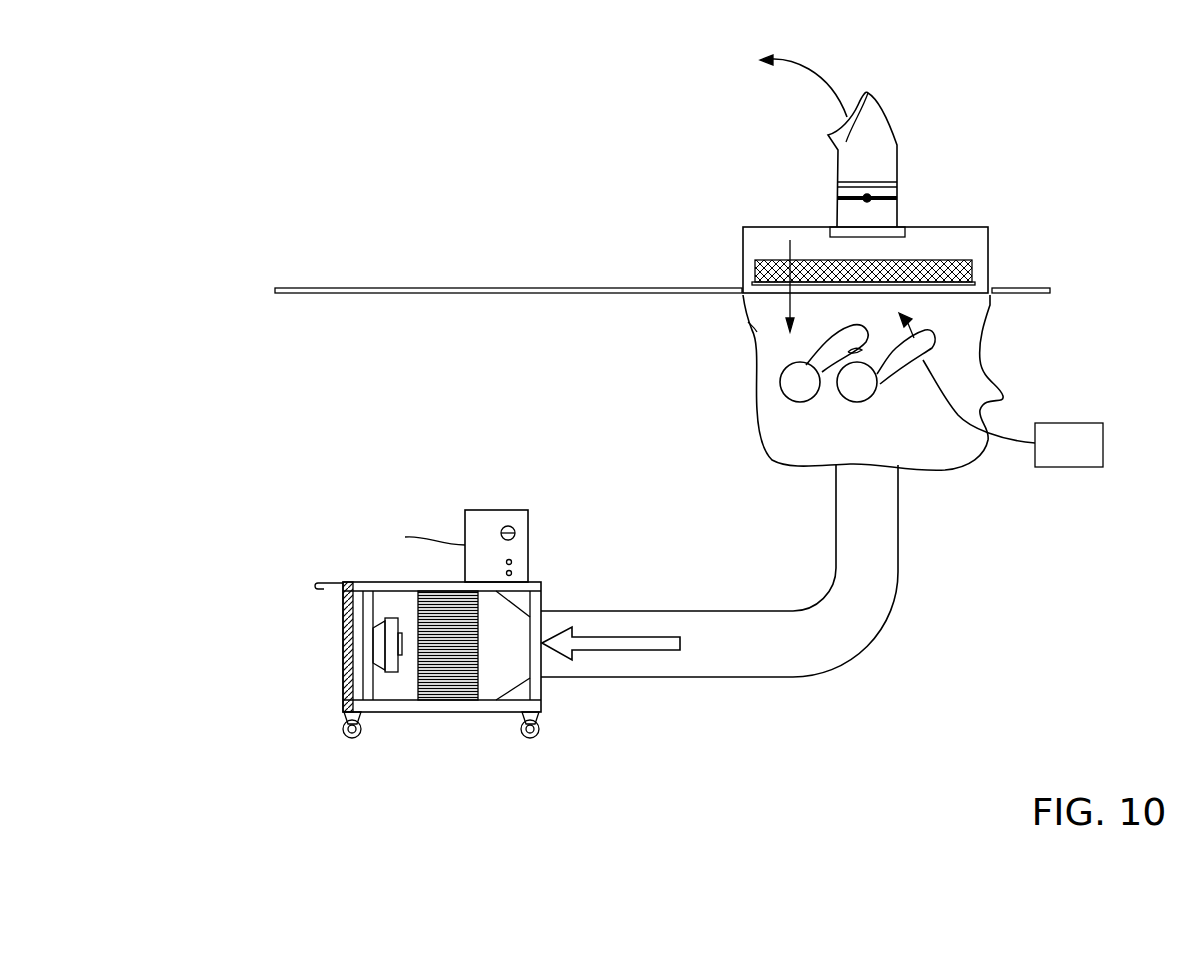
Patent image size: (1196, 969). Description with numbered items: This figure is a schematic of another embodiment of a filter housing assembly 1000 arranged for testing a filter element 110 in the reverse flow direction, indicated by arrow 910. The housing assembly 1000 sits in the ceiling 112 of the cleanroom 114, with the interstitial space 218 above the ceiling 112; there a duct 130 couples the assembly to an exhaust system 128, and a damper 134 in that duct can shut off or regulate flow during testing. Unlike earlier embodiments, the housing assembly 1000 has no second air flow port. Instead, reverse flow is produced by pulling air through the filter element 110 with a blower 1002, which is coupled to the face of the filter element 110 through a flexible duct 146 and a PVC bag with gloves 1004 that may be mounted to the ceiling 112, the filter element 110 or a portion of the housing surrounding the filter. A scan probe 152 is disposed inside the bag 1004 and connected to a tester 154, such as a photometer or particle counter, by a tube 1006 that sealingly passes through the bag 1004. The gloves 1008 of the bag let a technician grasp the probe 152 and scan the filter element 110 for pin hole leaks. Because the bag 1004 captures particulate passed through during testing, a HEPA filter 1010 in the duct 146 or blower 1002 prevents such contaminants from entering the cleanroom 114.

The exhaust system 128 is at (744, 75).
The interstitial space 218 is at (505, 153).
The duct 130 is at (882, 138).
The damper 134 is at (897, 205).
The filter housing assembly 1000 is at (743, 227).
The filter element 110 is at (967, 258).
The ceiling 112 is at (603, 288).
The arrow 910 is at (752, 326).
The PVC bag with gloves 1004 is at (758, 372).
The gloves 1008 is at (883, 386).
The scan probe 152 is at (908, 318).
The tube 1006 is at (1003, 398).
The tester 154 is at (1055, 457).
The duct 146 is at (836, 516).
The cleanroom 114 is at (966, 588).
The blower 1002 is at (387, 652).
The HEPA filter 1010 is at (448, 663).